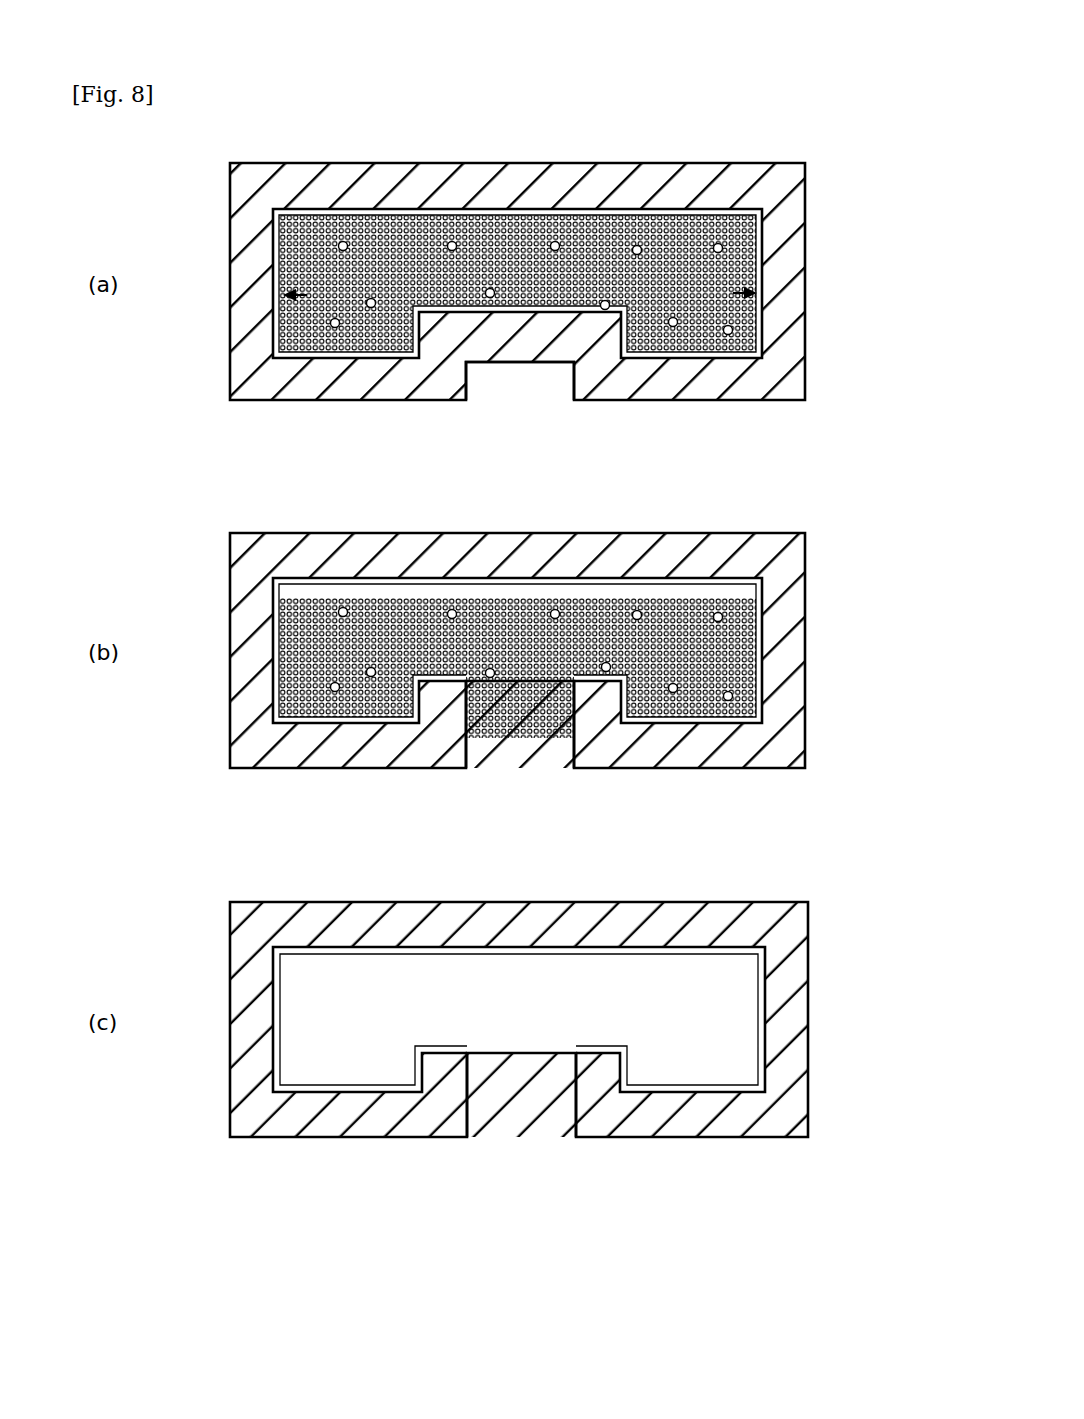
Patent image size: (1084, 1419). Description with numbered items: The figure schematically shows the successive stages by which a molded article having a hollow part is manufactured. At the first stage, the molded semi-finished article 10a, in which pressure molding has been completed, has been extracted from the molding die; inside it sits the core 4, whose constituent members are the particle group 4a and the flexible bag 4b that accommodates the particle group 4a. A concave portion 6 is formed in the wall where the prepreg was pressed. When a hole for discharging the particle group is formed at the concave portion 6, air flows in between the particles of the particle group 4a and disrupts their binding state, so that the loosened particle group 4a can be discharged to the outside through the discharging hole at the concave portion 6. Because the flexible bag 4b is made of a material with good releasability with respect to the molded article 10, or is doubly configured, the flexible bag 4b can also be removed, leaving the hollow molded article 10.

The mold having cavity 10a is at (770, 190).
The mold 10 is at (783, 953).
The composite layer 4 is at (595, 650).
The foam material 4a is at (740, 270).
The skin layer 4b is at (762, 221).
The opening 6 is at (523, 386).